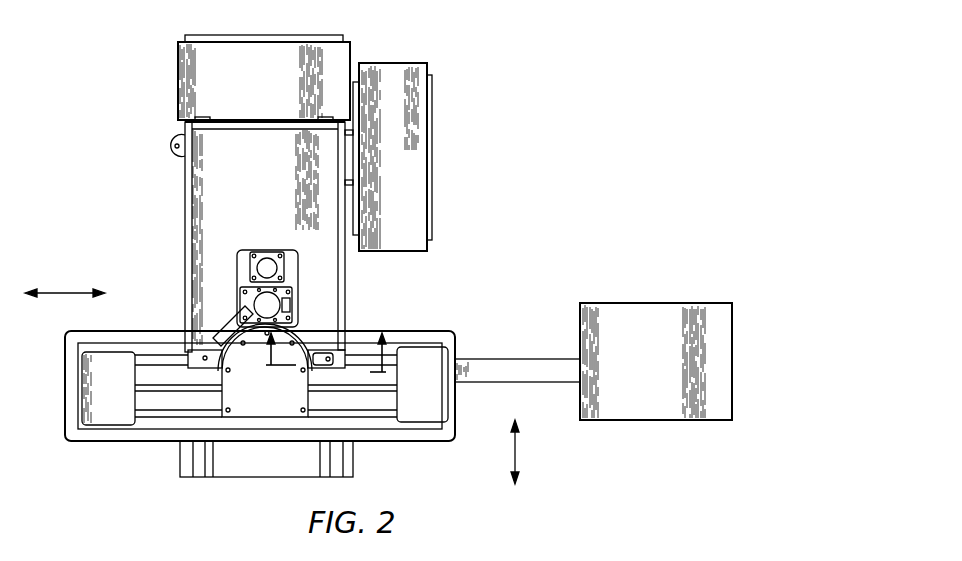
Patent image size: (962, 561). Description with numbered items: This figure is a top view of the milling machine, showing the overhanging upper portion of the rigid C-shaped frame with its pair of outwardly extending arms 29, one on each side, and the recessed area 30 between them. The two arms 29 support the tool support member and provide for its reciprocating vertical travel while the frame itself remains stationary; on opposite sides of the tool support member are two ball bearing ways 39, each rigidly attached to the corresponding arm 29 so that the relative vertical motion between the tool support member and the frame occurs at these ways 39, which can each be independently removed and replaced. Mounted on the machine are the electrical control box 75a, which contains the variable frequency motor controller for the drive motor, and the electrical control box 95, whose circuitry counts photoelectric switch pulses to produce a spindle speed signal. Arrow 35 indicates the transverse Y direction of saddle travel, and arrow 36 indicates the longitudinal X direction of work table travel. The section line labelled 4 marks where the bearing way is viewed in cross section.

The electrical control box 95 is at (178, 82).
The electrical control box 75a is at (410, 177).
The recessed area 30 is at (305, 345).
The section line 4- 4 is at (332, 364).
The outwardly extending arms 29 is at (193, 366).
The ball bearing ways 39 is at (208, 375).
The arrow 35 is at (515, 453).
The arrow 36 is at (55, 292).